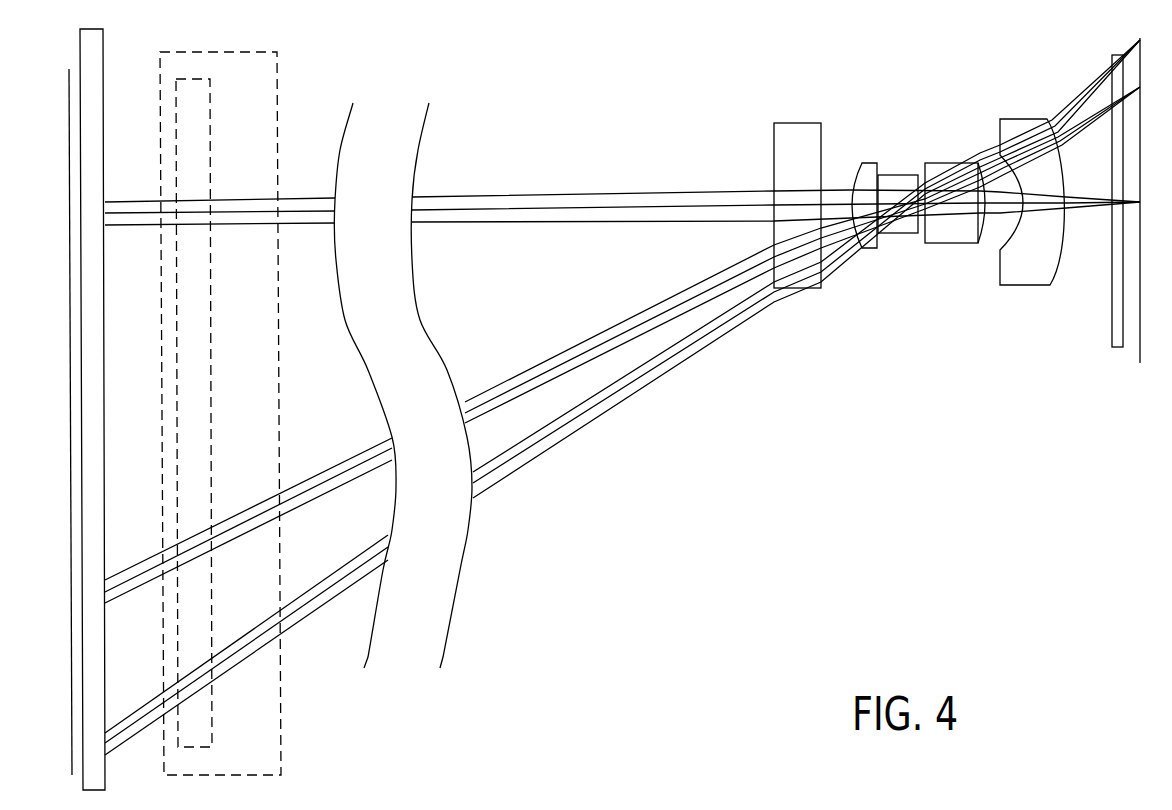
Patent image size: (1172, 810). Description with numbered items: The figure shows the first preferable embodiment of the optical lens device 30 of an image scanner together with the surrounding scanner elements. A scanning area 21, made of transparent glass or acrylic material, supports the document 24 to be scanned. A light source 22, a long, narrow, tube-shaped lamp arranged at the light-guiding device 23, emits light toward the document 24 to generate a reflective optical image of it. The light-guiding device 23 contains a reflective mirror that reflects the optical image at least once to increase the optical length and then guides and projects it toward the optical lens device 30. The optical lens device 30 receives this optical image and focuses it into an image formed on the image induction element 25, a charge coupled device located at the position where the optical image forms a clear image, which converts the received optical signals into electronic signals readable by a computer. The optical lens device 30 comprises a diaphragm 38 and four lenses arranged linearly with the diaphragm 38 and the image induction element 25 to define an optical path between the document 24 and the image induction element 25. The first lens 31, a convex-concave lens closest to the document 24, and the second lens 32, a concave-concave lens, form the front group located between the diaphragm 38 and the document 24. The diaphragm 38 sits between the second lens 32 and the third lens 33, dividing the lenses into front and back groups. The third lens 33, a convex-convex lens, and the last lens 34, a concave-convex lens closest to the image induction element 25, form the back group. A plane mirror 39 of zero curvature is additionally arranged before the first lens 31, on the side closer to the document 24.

The scanning area 21 is at (90, 590).
The light source 22 is at (212, 714).
The light-guiding device 23 is at (281, 735).
The document 24 is at (70, 512).
The image induction element 25 is at (1117, 349).
The optical lens device 30 is at (921, 270).
The first lens 31 is at (865, 250).
The second lens 32 is at (900, 236).
The third lens 33 is at (980, 245).
The last lens 34 is at (1032, 247).
The diaphragm 38 is at (948, 245).
The plane mirror 39 is at (793, 290).